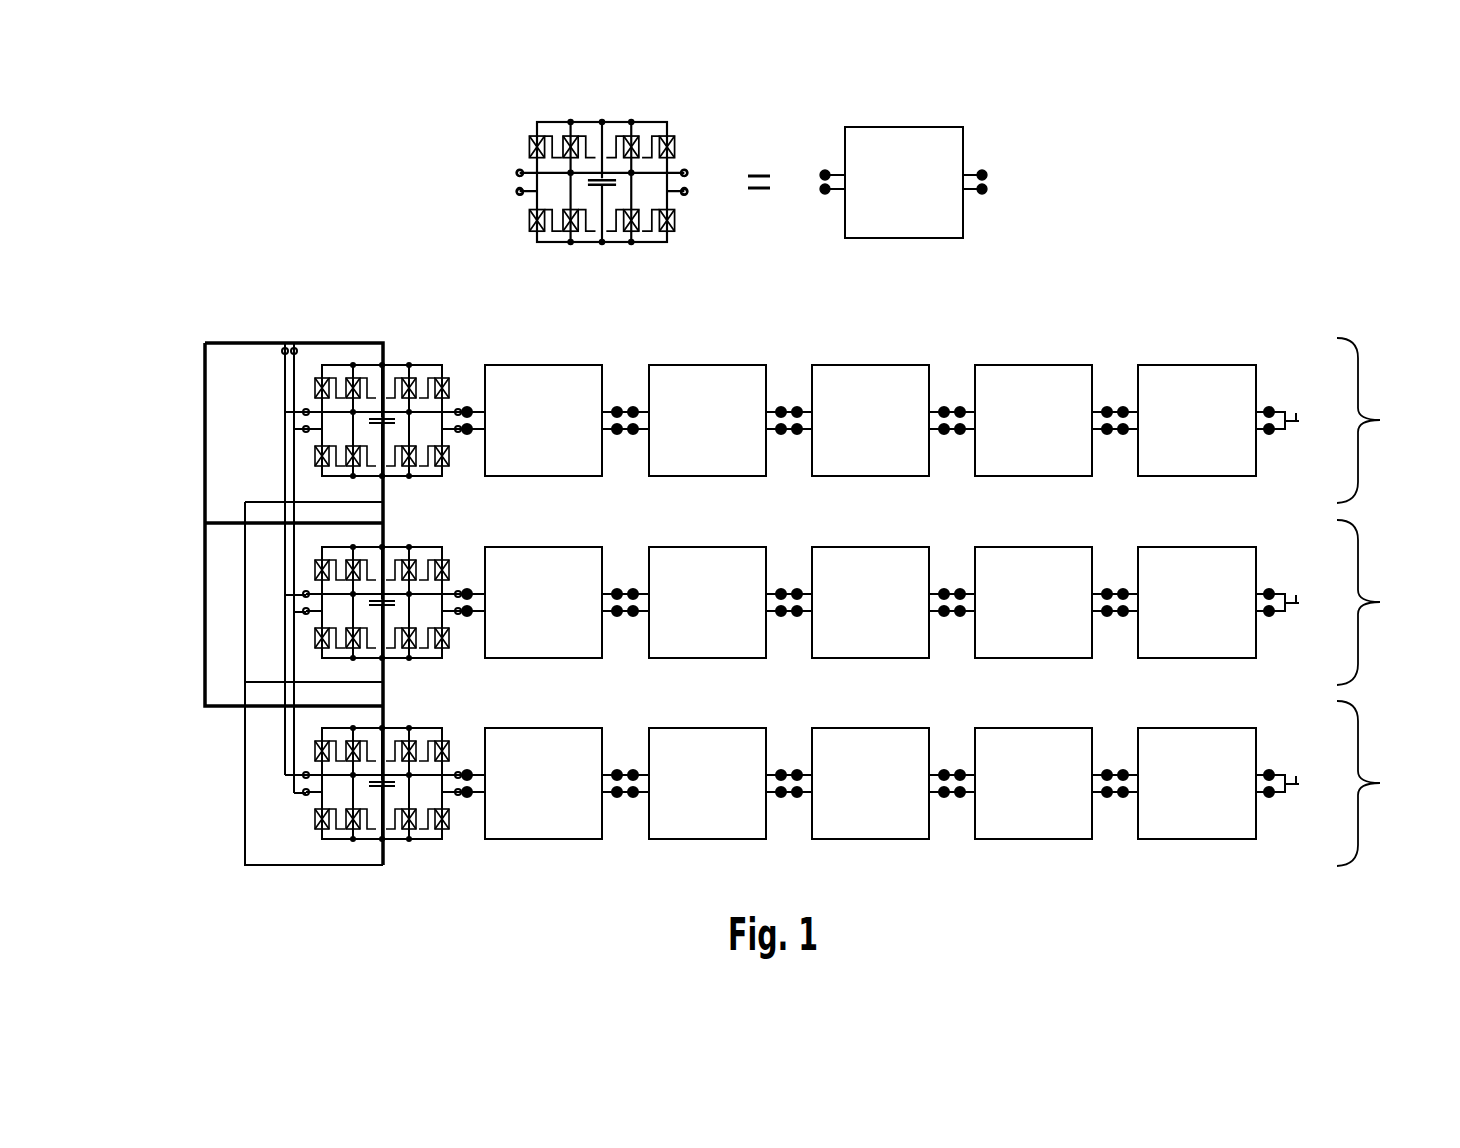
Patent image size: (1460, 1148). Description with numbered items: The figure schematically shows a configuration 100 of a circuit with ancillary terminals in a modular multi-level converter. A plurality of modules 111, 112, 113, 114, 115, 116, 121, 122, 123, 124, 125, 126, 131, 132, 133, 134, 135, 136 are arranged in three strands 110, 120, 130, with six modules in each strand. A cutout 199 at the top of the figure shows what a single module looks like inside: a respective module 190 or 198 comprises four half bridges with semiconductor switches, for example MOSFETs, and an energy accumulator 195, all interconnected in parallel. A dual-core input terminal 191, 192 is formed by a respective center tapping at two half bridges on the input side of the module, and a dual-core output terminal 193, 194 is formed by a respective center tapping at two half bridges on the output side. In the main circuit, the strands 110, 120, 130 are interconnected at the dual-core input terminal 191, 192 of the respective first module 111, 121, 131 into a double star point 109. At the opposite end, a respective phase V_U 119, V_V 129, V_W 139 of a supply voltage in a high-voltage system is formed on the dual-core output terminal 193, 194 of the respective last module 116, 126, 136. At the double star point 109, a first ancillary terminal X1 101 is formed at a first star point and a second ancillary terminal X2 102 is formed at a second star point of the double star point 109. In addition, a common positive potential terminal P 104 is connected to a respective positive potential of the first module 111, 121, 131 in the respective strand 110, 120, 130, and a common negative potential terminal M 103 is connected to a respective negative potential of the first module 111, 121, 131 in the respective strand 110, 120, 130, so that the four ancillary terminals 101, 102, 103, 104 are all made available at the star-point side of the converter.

The configuration 100 is at (172, 312).
The first ancillary terminal X1 101 is at (296, 342).
The second ancillary terminal X2 102 is at (283, 342).
The common negative potential terminal M 103 is at (245, 835).
The common positive potential terminal P 104 is at (205, 680).
The double star point 109 is at (270, 601).
The strand 110 is at (1384, 420).
The first module 111 is at (420, 365).
The module 112 is at (553, 365).
The module 113 is at (717, 365).
The module 114 is at (880, 365).
The module 115 is at (1043, 365).
The last module 116 is at (1206, 365).
The phase V_U 119 is at (1295, 414).
The strand 120 is at (1384, 602).
The first module 121 is at (420, 547).
The module 122 is at (553, 547).
The module 123 is at (717, 547).
The module 124 is at (880, 547).
The module 125 is at (1043, 547).
The last module 126 is at (1206, 547).
The phase V_V 129 is at (1295, 596).
The strand 130 is at (1384, 783).
The first module 131 is at (420, 728).
The module 132 is at (553, 728).
The module 133 is at (717, 728).
The module 134 is at (880, 728).
The module 135 is at (1043, 728).
The last module 136 is at (1206, 728).
The phase V_W 139 is at (1295, 777).
The module 190 is at (653, 115).
The dual-core input terminal 191 is at (514, 196).
The dual-core input terminal 192 is at (514, 170).
The dual-core output terminal 193 is at (690, 170).
The dual-core output terminal 194 is at (690, 196).
The energy accumulator 195 is at (612, 196).
The module 198 is at (910, 120).
The cutout 199 is at (385, 108).